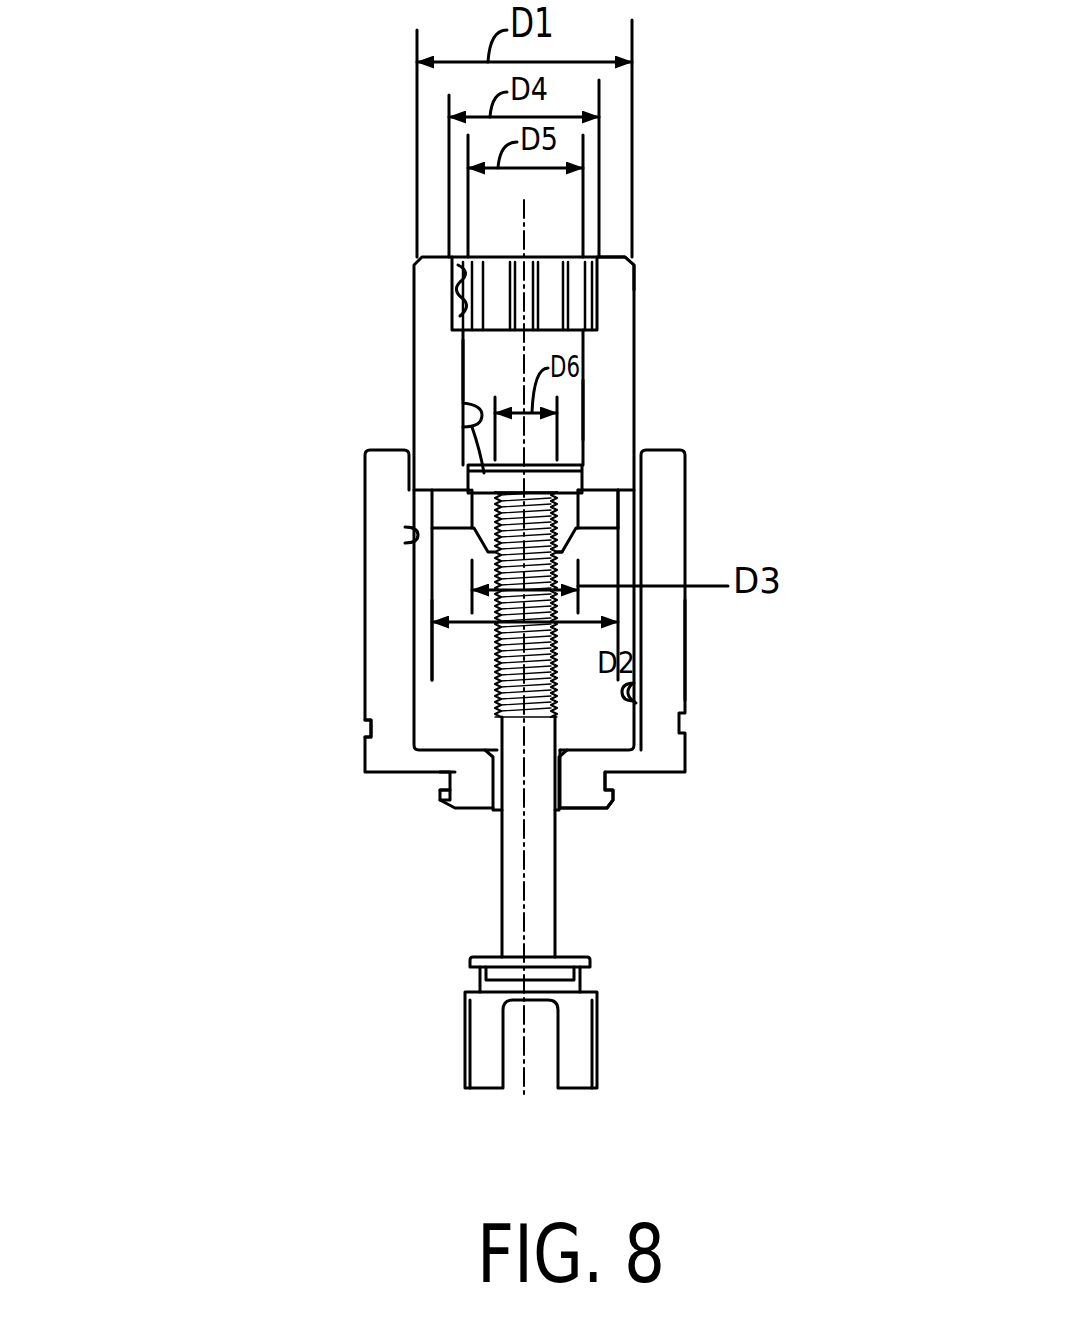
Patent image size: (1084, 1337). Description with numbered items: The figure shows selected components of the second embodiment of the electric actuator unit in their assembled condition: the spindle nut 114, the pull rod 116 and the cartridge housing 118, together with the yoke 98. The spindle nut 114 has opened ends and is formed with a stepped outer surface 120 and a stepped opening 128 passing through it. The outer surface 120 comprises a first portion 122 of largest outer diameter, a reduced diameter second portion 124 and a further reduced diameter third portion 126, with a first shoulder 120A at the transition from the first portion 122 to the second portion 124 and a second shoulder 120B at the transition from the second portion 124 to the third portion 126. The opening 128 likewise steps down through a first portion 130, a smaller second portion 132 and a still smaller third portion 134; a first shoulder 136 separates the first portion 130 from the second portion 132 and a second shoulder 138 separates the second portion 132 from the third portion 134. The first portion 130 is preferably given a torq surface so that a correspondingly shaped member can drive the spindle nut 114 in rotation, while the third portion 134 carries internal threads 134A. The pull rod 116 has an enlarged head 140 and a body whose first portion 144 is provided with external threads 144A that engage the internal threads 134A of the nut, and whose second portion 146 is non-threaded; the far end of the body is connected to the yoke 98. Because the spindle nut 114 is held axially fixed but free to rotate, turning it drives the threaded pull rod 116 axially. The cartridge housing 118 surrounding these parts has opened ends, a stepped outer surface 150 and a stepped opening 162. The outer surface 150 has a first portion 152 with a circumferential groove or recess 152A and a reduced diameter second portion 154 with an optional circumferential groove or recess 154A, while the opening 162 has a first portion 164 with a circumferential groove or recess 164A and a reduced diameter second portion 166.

The yoke 98 is at (583, 1062).
The spindle nut 114 is at (660, 303).
The pull rod 116 is at (590, 893).
The cartridge housing 118 is at (330, 780).
The stepped outer surface 120 is at (635, 368).
The first shoulder 120A is at (432, 505).
The second shoulder 120B is at (432, 563).
The first portion 122 is at (634, 278).
The second portion 124 is at (575, 503).
The third portion 126 is at (573, 555).
The stepped opening 128 is at (485, 383).
The first portion 130 is at (462, 277).
The second portion 132 is at (462, 412).
The third portion 134 is at (568, 518).
The internal threads 134A is at (497, 510).
The first shoulder 136 is at (462, 302).
The second shoulder 138 is at (600, 410).
The enlarged head 140 is at (472, 433).
The first portion 144 is at (615, 683).
The external threads 144A is at (495, 690).
The second portion 146 is at (545, 840).
The outer surface 150 is at (690, 657).
The first portion 152 is at (373, 613).
The circumferential groove or recess 152A is at (373, 723).
The second portion 154 is at (468, 780).
The circumferential groove or recess 154A is at (450, 775).
The opening 162 is at (630, 720).
The first portion 164 is at (640, 690).
The circumferential groove or recess 164A is at (395, 543).
The second portion 166 is at (555, 785).